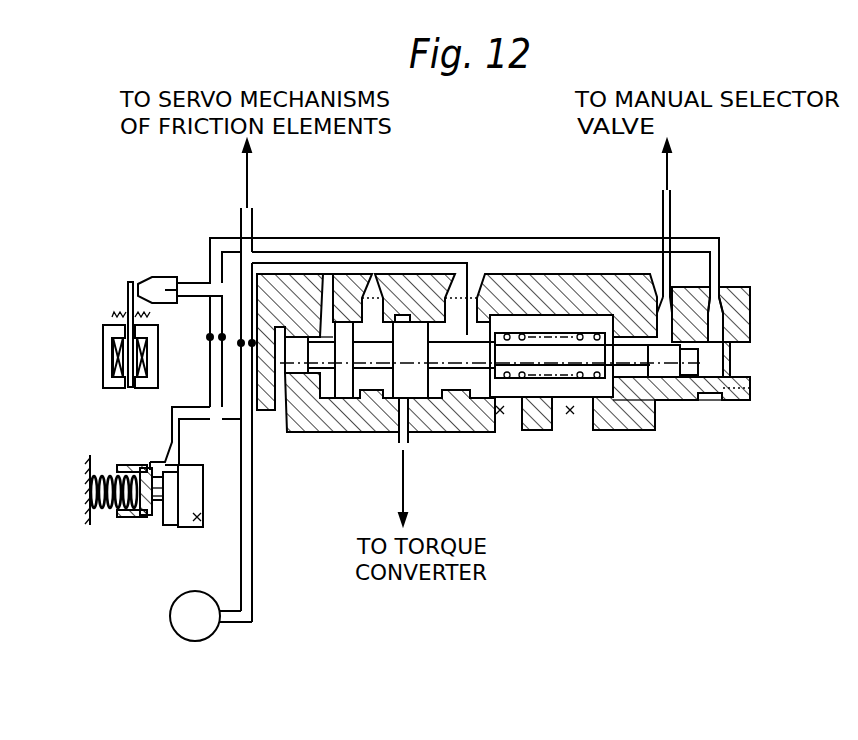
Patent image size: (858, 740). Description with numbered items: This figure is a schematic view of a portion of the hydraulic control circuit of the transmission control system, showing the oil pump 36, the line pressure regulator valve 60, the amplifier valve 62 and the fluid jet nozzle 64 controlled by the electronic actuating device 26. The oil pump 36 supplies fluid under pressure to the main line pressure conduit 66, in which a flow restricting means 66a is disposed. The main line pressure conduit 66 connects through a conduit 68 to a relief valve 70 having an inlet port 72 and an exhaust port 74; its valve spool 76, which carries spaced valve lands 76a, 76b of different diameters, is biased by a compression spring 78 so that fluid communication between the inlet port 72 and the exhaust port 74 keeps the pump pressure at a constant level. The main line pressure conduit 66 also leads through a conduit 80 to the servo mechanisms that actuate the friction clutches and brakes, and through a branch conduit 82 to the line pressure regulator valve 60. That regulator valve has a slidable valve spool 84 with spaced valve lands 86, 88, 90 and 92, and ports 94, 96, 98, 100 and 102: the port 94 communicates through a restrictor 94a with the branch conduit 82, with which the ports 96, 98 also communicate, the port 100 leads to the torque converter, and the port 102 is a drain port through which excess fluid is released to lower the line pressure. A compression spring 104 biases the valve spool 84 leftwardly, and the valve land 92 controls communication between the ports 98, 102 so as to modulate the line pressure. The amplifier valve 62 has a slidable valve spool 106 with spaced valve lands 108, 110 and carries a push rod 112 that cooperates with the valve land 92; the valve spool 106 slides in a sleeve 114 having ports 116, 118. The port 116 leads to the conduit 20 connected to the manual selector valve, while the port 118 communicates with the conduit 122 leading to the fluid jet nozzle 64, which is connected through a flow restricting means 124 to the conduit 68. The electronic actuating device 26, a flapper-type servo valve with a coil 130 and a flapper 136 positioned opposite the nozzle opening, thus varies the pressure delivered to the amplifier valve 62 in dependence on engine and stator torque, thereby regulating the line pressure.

The line to manual selector valve 20 is at (663, 202).
The electronic actuating device 26 is at (88, 336).
The oil pump 36 is at (210, 630).
The line pressure regulator valve 60 is at (341, 450).
The amplifier valve 62 is at (596, 436).
The fluid jet nozzle 64 is at (154, 275).
The main line pressure conduit 66 is at (251, 572).
The flow restricting means 66a is at (256, 400).
The conduit 68 is at (204, 420).
The relief valve 70 is at (174, 538).
The inlet port 72 is at (168, 458).
The exhaust port 74 is at (193, 520).
The valve spool 76 is at (151, 516).
The valve land 76a is at (137, 518).
The valve land 76b is at (176, 490).
The compression spring 78 is at (110, 512).
The conduit 80 is at (249, 206).
The branch conduit 82 is at (274, 262).
The valve spool 84 is at (457, 358).
The valve land 86 is at (292, 380).
The valve land 88 is at (327, 400).
The valve land 90 is at (415, 402).
The valve land 92 is at (481, 417).
The port 94 is at (327, 380).
The restrictor 94a is at (325, 274).
The port 96 is at (373, 307).
The port 98 is at (462, 310).
The port 100 is at (400, 413).
The drain port 102 is at (502, 420).
The compression spring 104 is at (578, 416).
The valve spool 106 is at (650, 400).
The valve land 108 is at (637, 402).
The valve land 110 is at (690, 403).
The push rod 112 is at (561, 352).
The sleeve 114 is at (726, 389).
The port 116 is at (662, 335).
The port 118 is at (720, 342).
The conduit 122 is at (323, 240).
The flow restricting means 124 is at (210, 337).
The coil 130 is at (112, 364).
The flapper 136 is at (128, 287).